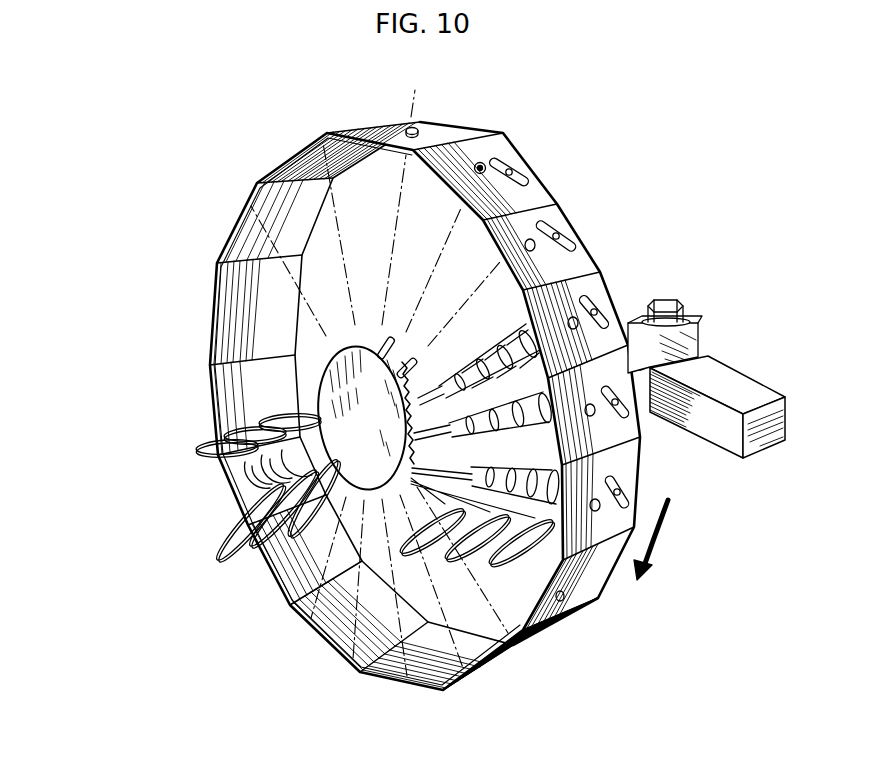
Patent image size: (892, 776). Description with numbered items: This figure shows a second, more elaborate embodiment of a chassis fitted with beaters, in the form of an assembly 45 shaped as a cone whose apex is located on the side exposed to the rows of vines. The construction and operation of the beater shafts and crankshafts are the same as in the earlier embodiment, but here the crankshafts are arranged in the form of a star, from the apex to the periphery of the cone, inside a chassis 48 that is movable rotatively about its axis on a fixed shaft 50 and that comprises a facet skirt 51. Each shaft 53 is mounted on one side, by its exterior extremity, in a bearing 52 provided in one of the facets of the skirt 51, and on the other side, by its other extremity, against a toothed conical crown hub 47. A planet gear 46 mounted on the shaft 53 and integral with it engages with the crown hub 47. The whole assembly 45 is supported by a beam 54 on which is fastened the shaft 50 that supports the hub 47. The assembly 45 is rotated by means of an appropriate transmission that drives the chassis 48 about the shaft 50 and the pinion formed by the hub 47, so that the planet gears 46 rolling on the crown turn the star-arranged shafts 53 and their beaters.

The assembly 45 is at (203, 322).
The planet gear 46 is at (392, 358).
The toothed conical crown hub 47 is at (390, 390).
The chassis 48 is at (605, 258).
The fixed shaft 50 is at (697, 353).
The facet skirt 51 is at (528, 197).
The bearing 52 is at (478, 152).
The shaft 53 is at (440, 372).
The beam 54 is at (748, 397).